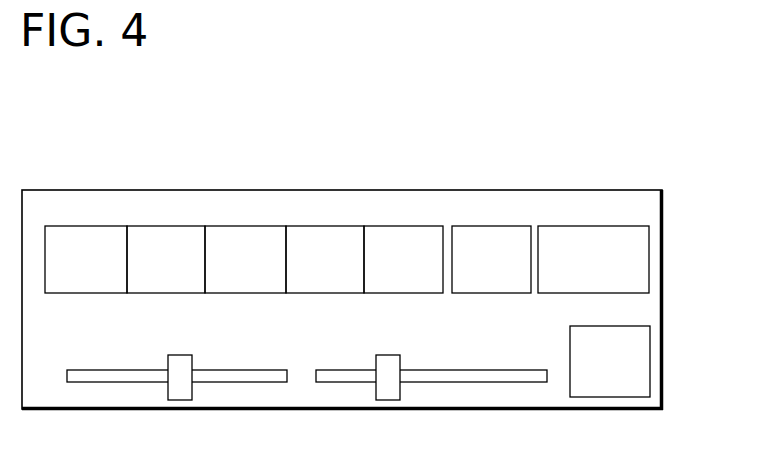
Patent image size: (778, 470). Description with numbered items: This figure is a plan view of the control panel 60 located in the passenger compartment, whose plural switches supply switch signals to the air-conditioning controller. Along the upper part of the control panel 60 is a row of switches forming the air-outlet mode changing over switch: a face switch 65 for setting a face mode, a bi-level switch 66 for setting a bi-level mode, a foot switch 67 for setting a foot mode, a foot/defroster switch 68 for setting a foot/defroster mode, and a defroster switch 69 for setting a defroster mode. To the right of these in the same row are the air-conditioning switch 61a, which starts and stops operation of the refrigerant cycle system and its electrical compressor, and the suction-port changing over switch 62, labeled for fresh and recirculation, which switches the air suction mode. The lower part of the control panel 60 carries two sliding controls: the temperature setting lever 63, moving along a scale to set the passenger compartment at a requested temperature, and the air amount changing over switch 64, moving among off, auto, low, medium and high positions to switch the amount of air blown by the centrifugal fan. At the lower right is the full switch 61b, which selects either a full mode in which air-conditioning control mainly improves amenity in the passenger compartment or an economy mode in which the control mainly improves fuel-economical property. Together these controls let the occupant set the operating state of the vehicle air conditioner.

The control panel 60 is at (33, 199).
The face switch 65 is at (81, 225).
The bi-level switch 66 is at (163, 225).
The foot switch 67 is at (240, 225).
The foot/defroster switch 68 is at (320, 225).
The defroster switch 69 is at (398, 225).
The air-conditioning switch 61a is at (487, 225).
The suction-port changing over switch 62 is at (588, 225).
The temperature setting lever 63 is at (178, 400).
The air amount changing over switch 64 is at (388, 400).
The full switch 61b is at (651, 361).